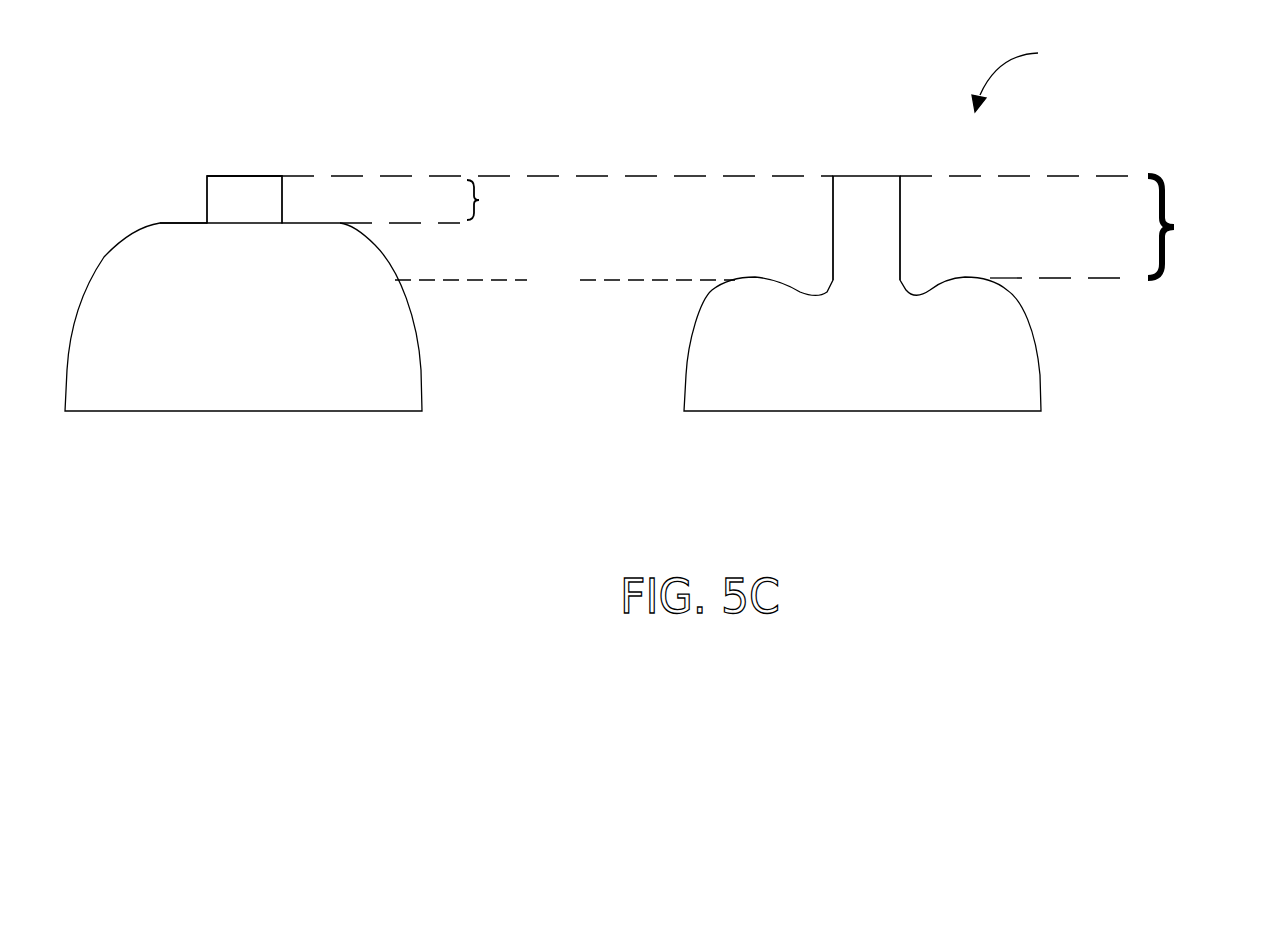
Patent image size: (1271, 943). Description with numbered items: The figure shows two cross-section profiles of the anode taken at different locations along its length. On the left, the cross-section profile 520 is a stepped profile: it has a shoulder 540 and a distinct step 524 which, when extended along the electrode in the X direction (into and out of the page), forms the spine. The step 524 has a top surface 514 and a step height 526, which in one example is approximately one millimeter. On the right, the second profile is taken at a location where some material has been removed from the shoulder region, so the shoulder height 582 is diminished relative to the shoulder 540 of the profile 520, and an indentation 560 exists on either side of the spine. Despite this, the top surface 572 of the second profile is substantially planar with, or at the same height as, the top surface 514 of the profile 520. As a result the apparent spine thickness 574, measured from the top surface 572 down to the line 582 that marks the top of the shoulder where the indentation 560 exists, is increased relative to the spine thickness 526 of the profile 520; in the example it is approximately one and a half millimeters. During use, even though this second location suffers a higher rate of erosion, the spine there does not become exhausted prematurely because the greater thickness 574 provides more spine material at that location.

The cross-section profile 520 is at (360, 120).
The step 524 is at (235, 196).
The top surface 514 is at (259, 176).
The shoulder 540 is at (176, 221).
The step height 526 is at (483, 200).
The shoulder height 582 is at (766, 282).
The top surface 572 is at (867, 175).
The indentation 560 is at (817, 293).
The spine thickness 574 is at (1186, 228).